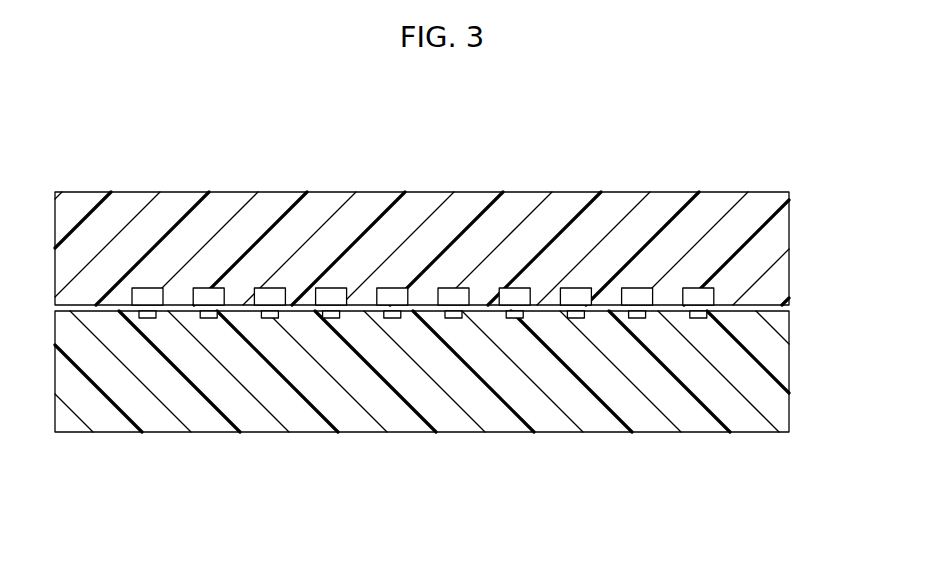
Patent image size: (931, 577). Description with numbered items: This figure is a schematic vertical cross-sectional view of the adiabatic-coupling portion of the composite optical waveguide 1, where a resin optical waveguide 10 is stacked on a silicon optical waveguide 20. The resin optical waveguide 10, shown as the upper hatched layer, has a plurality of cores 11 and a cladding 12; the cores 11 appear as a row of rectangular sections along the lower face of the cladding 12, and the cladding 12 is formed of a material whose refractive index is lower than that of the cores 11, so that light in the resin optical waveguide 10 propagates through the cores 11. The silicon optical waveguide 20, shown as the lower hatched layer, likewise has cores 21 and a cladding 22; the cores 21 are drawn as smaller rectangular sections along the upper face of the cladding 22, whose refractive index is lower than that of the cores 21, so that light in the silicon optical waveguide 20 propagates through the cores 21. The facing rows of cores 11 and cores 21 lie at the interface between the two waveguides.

The composite optical waveguide 1 is at (428, 309).
The resin optical waveguide 10 is at (422, 197).
The cores 11 is at (392, 293).
The cladding 12 is at (445, 213).
The silicon optical waveguide 20 is at (422, 420).
The cores 21 is at (390, 320).
The cladding 22 is at (447, 405).